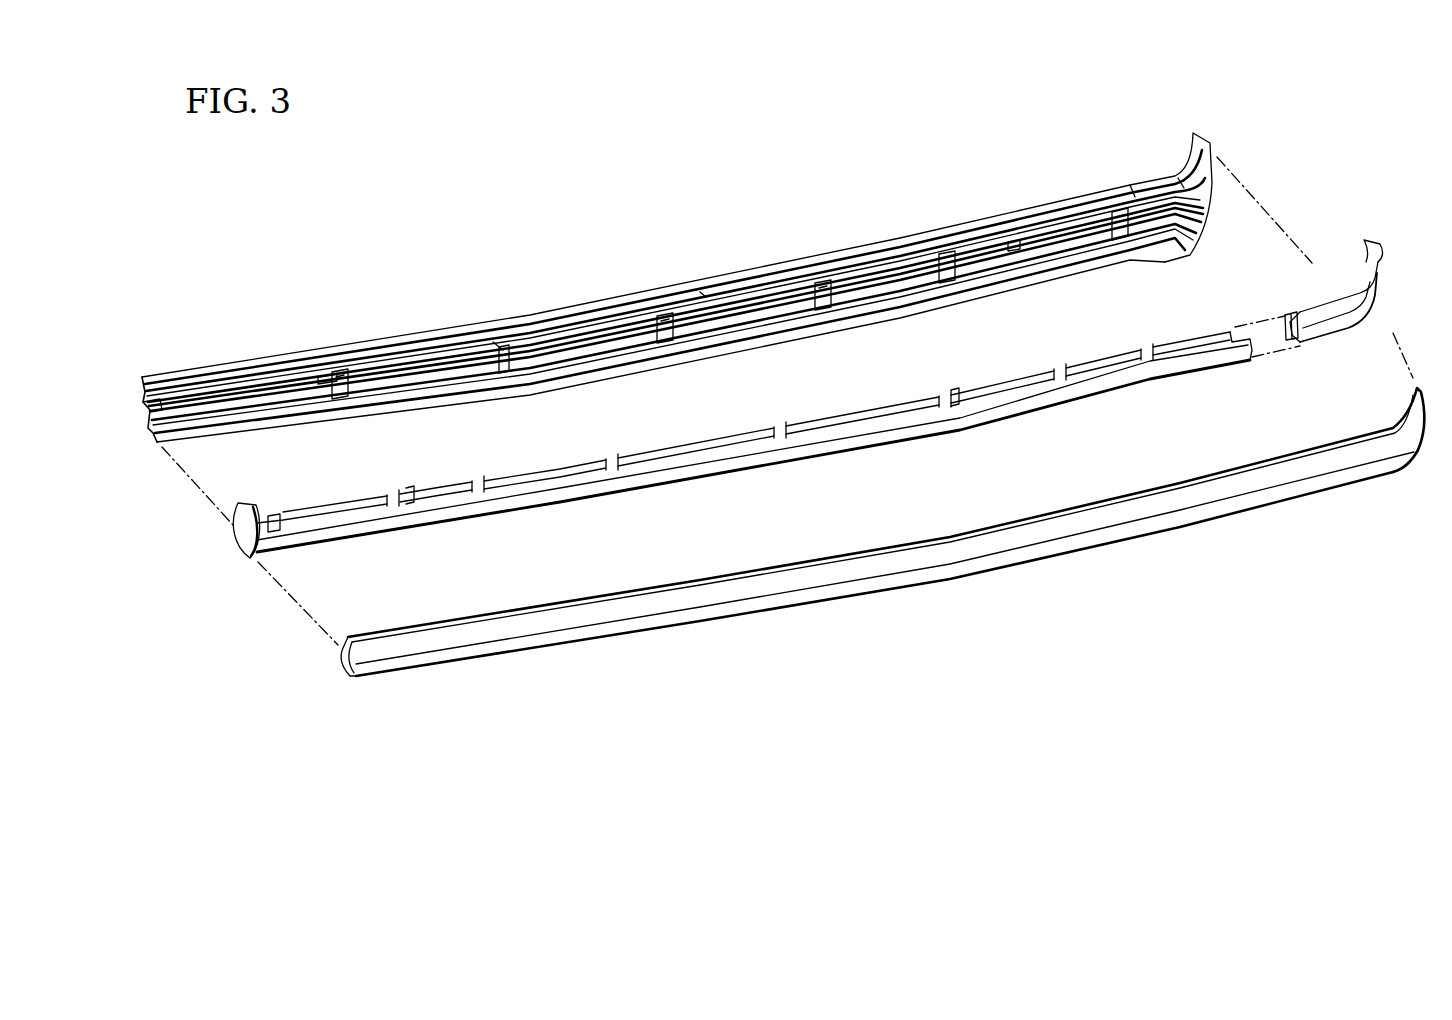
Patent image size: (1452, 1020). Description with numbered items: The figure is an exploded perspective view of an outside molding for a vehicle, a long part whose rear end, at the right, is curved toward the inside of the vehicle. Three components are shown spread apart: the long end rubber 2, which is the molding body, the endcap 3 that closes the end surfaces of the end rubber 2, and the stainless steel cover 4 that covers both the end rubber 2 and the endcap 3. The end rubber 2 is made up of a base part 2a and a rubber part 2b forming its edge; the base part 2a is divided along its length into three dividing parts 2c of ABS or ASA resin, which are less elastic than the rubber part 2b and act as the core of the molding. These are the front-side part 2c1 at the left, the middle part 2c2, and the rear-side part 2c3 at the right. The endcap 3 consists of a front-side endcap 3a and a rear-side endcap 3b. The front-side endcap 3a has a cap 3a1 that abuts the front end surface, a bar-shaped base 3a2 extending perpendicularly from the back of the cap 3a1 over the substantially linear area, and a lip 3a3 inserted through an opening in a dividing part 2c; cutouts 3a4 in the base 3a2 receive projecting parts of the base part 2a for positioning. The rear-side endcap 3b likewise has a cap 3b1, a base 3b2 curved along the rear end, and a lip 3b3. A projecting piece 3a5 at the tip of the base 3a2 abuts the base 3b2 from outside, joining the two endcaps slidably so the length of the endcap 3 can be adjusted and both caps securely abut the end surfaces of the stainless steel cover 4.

The end rubber 2 is at (1171, 148).
The base part 2a is at (1113, 130).
The rubber part 2b is at (172, 372).
The dividing parts 2c is at (674, 268).
The front-side part 2c1 is at (238, 397).
The middle part 2c2 is at (610, 332).
The rear-side part 2c3 is at (1047, 238).
The endcap 3 is at (222, 546).
The front-side endcap 3a is at (534, 524).
The cap 3a1 is at (248, 535).
The base 3a2 is at (722, 471).
The lip 3a3 is at (612, 459).
The cutouts 3a4 is at (400, 508).
The projecting piece 3a5 is at (1256, 356).
The rear-side endcap 3b is at (1376, 320).
The cap 3b1 is at (1377, 244).
The base 3b2 is at (1357, 338).
The lip 3b3 is at (1290, 314).
The stainless steel cover 4 is at (873, 584).